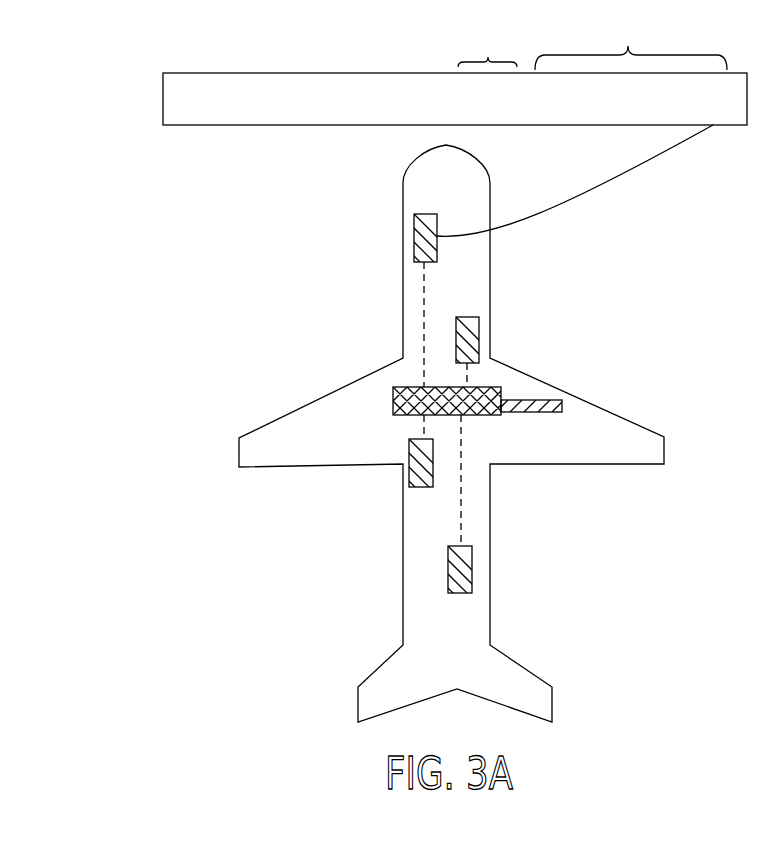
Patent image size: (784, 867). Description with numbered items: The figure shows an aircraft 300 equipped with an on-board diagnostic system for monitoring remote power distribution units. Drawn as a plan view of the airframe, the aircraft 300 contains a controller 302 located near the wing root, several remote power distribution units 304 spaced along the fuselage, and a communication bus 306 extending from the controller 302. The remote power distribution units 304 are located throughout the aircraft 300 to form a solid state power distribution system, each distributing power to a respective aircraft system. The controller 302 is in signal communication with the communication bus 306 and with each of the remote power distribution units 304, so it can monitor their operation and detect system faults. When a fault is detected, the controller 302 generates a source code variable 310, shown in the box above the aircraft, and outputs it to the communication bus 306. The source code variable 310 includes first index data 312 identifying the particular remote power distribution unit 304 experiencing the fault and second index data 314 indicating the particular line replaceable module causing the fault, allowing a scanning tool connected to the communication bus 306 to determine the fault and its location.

The aircraft 300 is at (381, 183).
The controller 302 is at (400, 403).
The remote power distribution unit 304 is at (418, 247).
The communication bus 306 is at (549, 406).
The source code variable 310 is at (163, 100).
The first index data 312 is at (487, 44).
The second index data 314 is at (631, 39).